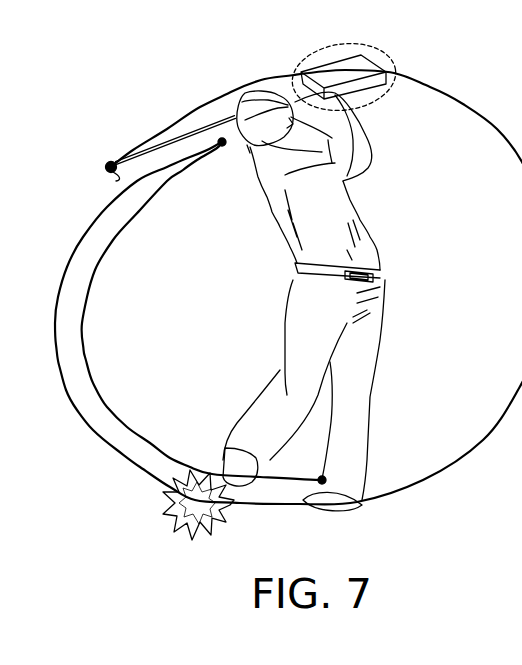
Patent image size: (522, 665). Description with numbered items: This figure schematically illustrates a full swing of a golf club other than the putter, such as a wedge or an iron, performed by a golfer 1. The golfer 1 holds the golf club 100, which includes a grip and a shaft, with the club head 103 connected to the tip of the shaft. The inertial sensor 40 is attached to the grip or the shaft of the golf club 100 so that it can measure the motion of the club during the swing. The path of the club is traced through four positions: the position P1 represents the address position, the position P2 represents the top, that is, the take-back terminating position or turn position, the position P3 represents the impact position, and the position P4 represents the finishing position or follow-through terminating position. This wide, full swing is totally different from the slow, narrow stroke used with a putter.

The golfer 1 is at (377, 232).
The inertial sensor 40 is at (361, 67).
The golf club 100 is at (198, 127).
The club head 103 is at (111, 162).
The address position P1 is at (322, 479).
The top position P2 is at (225, 147).
The impact position P3 is at (165, 518).
The finishing position P4 is at (108, 170).